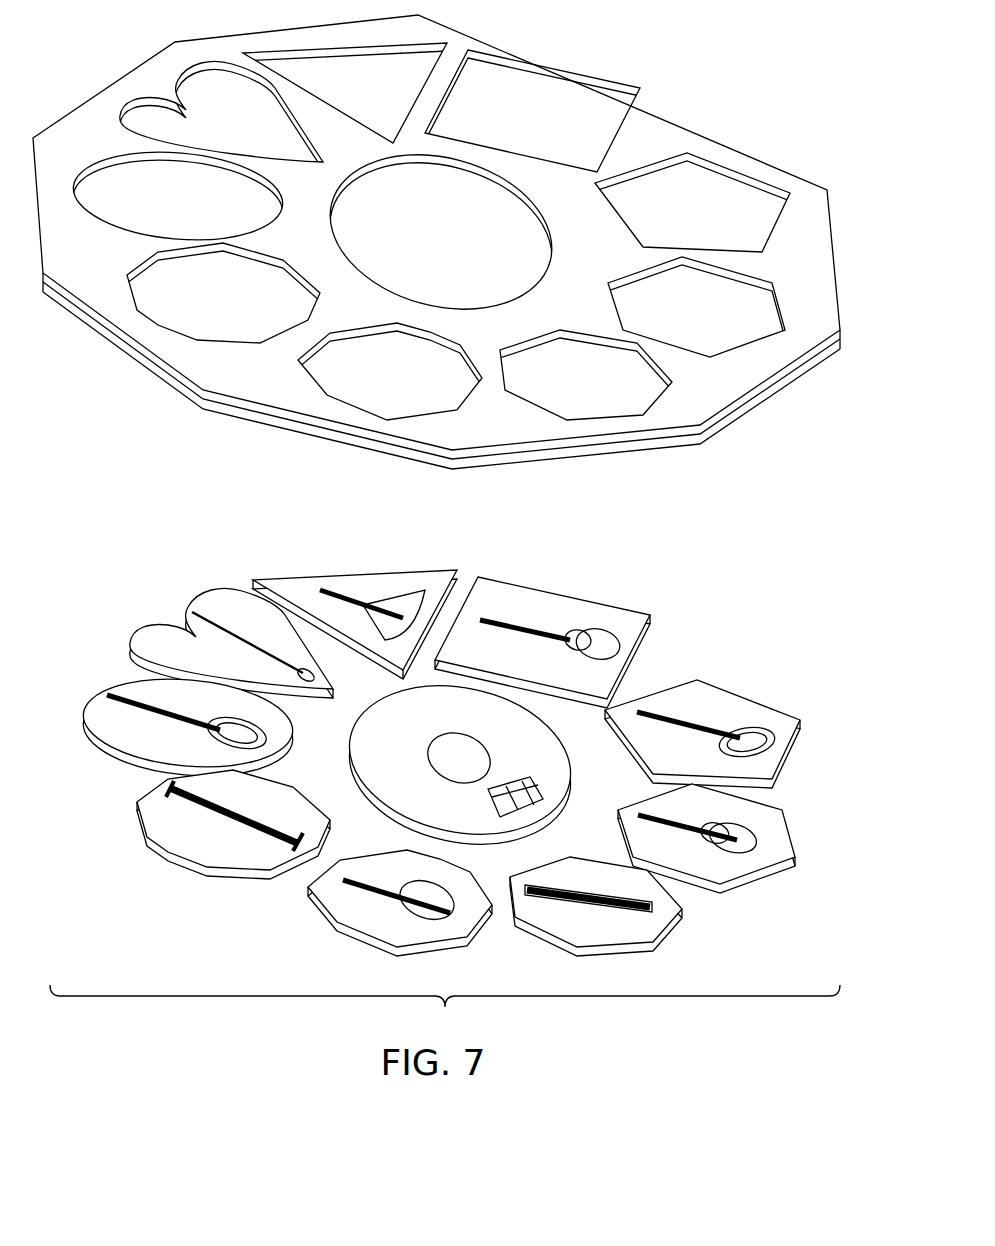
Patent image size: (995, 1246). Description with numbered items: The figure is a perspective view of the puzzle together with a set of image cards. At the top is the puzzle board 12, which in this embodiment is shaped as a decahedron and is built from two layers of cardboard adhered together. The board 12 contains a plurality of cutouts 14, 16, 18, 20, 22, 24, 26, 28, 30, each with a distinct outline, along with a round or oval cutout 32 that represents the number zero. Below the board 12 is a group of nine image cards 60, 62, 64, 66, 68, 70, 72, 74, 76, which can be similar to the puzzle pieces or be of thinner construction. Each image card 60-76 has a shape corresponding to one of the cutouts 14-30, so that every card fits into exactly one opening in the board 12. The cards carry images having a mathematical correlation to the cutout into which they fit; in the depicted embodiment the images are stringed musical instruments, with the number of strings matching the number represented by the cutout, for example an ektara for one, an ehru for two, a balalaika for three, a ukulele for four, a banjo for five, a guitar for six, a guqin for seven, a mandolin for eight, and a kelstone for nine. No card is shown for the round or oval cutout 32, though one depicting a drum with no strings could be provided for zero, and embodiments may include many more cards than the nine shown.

The puzzle board 12 is at (676, 98).
The cutout 14 is at (679, 217).
The cutout 16 is at (689, 317).
The cutout 18 is at (567, 390).
The cutout 20 is at (379, 382).
The cutout 22 is at (209, 307).
The cutout 24 is at (151, 207).
The cutout 26 is at (211, 125).
The cutout 28 is at (357, 95).
The cutout 30 is at (516, 120).
The round or oval cutout 32 is at (430, 242).
The image card 60 is at (733, 708).
The image card 62 is at (765, 817).
The image card 64 is at (662, 933).
The image card 66 is at (445, 935).
The image card 68 is at (250, 857).
The image card 70 is at (110, 737).
The image card 72 is at (148, 645).
The image card 74 is at (365, 583).
The image card 76 is at (553, 605).